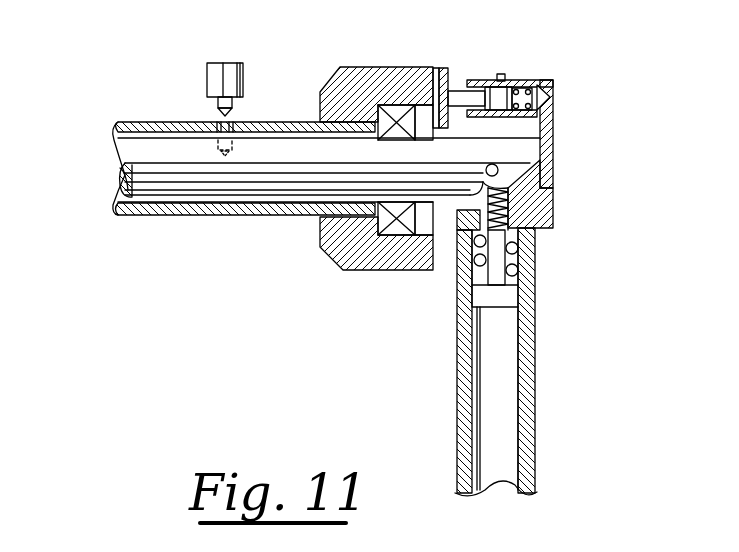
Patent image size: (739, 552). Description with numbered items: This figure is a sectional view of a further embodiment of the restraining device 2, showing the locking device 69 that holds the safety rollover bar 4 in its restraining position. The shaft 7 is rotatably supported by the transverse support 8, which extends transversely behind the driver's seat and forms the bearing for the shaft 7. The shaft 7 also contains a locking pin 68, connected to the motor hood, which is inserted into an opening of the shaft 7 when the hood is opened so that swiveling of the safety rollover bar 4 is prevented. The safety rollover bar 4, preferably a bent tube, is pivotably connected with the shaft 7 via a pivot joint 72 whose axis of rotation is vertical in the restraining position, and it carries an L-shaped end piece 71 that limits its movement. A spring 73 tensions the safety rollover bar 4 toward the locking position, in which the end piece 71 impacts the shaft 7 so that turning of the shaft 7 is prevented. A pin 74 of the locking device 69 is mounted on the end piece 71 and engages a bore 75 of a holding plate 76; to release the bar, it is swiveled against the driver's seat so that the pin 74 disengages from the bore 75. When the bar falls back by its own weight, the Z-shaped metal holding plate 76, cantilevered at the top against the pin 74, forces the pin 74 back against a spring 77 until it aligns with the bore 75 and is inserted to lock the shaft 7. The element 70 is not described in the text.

The restraining device 2 is at (80, 112).
The safety rollover bar 4 is at (535, 382).
The shaft 7 is at (158, 150).
The transverse support 8 is at (188, 124).
The locking pin 68 is at (218, 72).
The locking device 69 is at (555, 80).
The bracket 70 is at (543, 148).
The L-shaped end piece 71 is at (543, 213).
The pivot joint 72 is at (498, 169).
The spring 73 is at (518, 272).
The pin 74 is at (502, 76).
The bore 75 is at (452, 84).
The holding plate 76 is at (480, 92).
The spring 77 is at (533, 85).